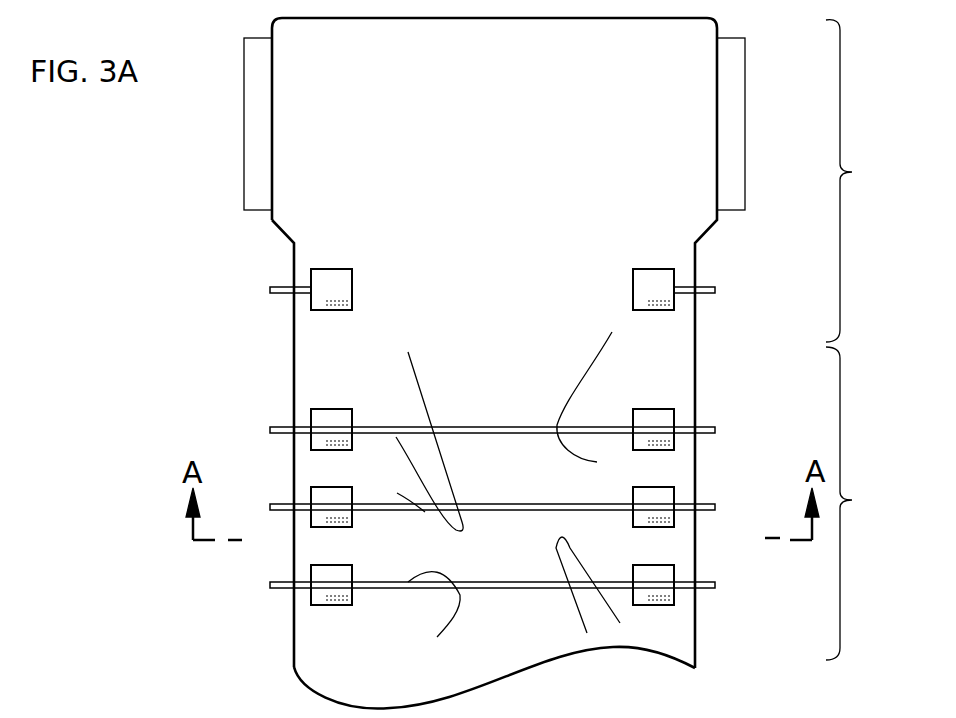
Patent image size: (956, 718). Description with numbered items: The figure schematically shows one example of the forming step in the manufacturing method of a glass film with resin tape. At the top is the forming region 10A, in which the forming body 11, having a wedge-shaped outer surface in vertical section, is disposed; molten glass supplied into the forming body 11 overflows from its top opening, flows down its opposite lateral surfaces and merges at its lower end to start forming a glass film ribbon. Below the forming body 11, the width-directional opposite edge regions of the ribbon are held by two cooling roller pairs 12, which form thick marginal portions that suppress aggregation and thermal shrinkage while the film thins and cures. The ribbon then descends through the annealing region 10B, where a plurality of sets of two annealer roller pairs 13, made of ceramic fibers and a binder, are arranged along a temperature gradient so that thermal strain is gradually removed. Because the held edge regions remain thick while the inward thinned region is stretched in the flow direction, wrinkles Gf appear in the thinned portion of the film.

The forming region 10A is at (871, 181).
The annealing region 10B is at (871, 503).
The forming body 11 is at (735, 138).
The cooling roller pairs 12 is at (660, 280).
The annealer roller pairs 13 is at (660, 420).
The wrinkles Gf is at (400, 420).